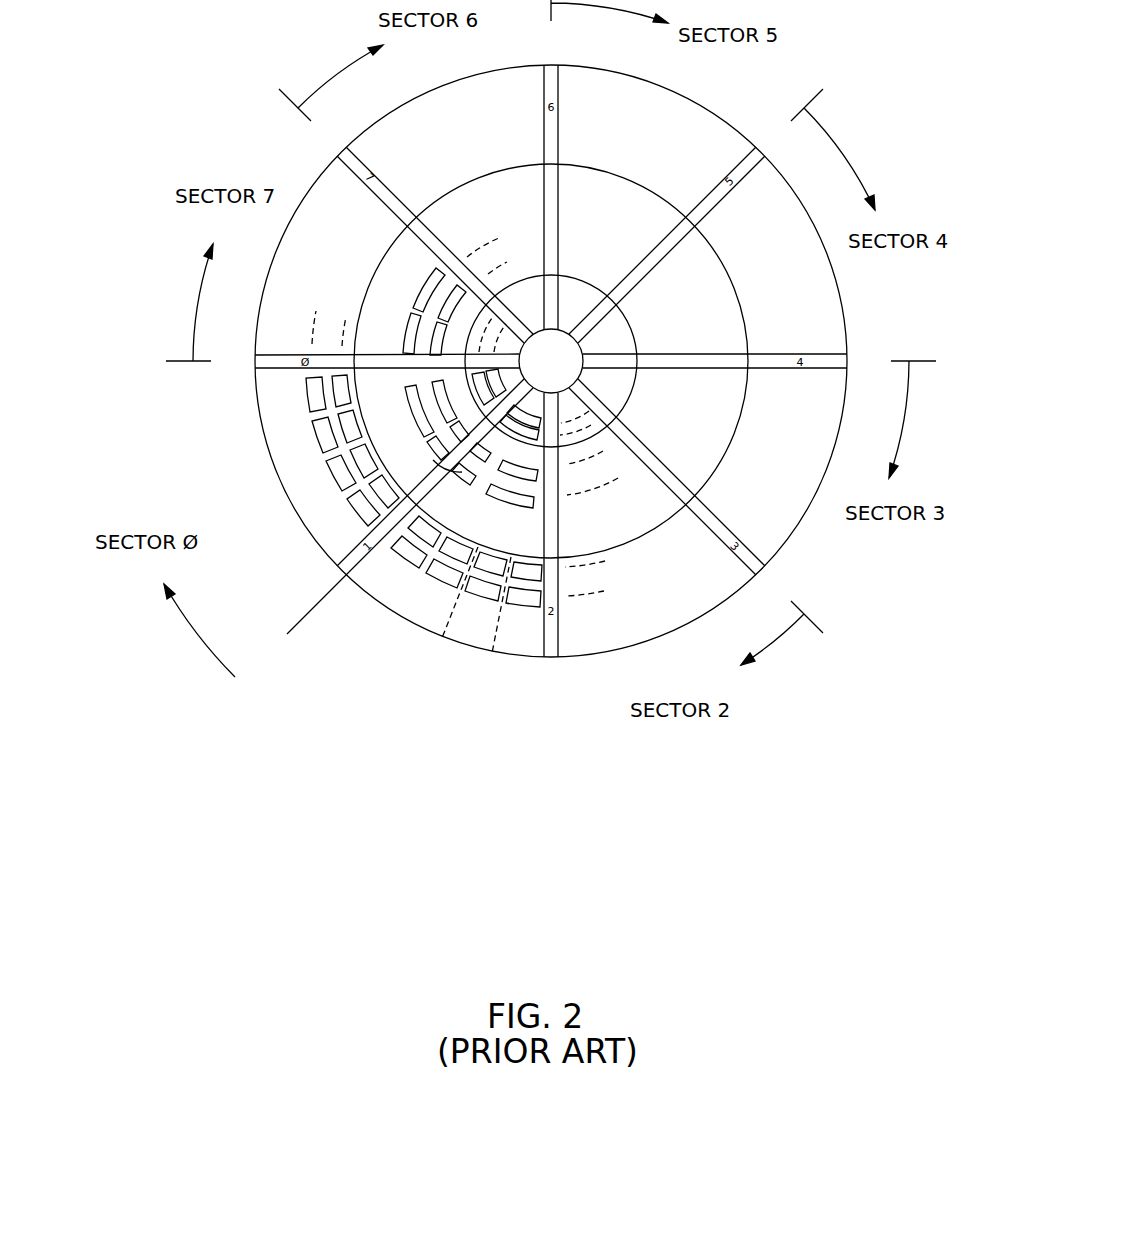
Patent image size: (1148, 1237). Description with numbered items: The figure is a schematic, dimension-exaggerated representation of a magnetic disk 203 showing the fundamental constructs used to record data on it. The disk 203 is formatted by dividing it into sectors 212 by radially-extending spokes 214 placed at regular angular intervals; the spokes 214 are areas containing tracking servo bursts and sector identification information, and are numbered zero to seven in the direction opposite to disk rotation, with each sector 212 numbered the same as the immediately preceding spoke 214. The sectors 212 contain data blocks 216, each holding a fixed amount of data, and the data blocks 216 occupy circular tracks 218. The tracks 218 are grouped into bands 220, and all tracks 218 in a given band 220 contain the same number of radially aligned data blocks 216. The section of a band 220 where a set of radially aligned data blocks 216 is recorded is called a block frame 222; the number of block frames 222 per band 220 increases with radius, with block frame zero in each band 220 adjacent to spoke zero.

The magnetic disk 203 is at (205, 178).
The sectors 212 is at (551, 701).
The spokes 214 is at (742, 170).
The data blocks 216 is at (362, 507).
The tracks 218 is at (603, 593).
The bands 220 is at (750, 440).
The block frame 222 is at (467, 636).